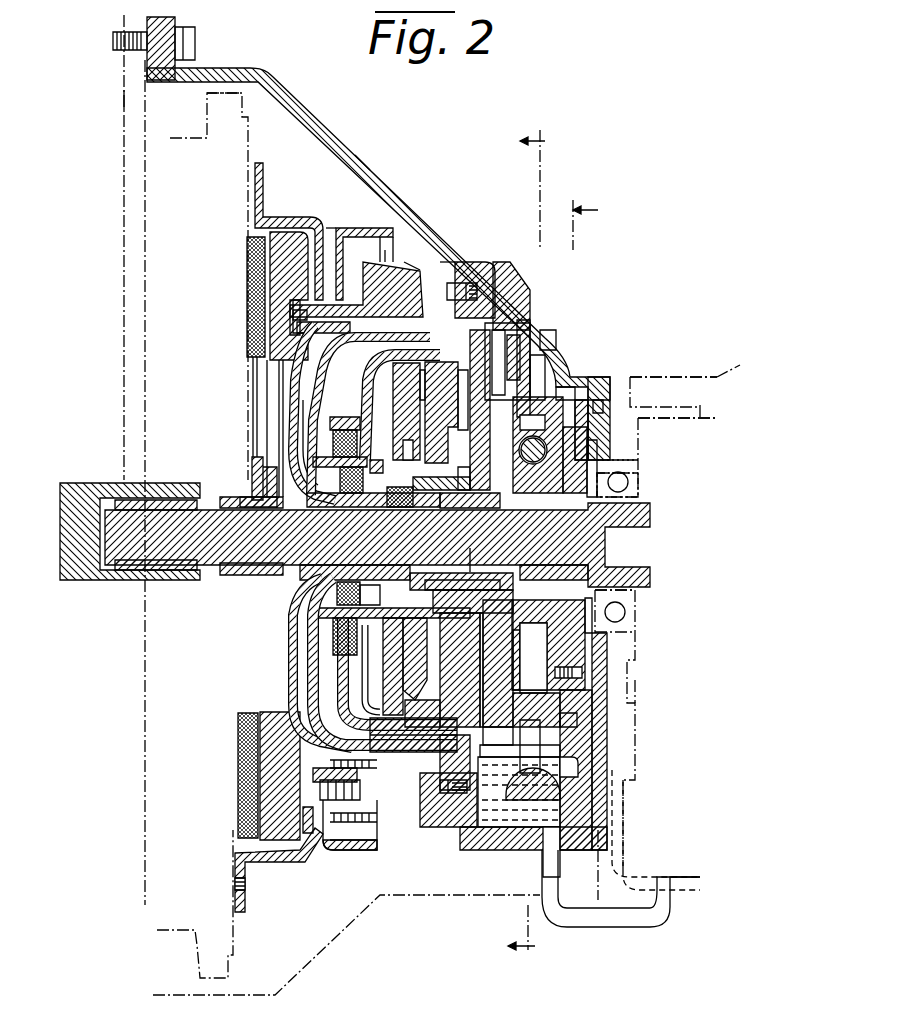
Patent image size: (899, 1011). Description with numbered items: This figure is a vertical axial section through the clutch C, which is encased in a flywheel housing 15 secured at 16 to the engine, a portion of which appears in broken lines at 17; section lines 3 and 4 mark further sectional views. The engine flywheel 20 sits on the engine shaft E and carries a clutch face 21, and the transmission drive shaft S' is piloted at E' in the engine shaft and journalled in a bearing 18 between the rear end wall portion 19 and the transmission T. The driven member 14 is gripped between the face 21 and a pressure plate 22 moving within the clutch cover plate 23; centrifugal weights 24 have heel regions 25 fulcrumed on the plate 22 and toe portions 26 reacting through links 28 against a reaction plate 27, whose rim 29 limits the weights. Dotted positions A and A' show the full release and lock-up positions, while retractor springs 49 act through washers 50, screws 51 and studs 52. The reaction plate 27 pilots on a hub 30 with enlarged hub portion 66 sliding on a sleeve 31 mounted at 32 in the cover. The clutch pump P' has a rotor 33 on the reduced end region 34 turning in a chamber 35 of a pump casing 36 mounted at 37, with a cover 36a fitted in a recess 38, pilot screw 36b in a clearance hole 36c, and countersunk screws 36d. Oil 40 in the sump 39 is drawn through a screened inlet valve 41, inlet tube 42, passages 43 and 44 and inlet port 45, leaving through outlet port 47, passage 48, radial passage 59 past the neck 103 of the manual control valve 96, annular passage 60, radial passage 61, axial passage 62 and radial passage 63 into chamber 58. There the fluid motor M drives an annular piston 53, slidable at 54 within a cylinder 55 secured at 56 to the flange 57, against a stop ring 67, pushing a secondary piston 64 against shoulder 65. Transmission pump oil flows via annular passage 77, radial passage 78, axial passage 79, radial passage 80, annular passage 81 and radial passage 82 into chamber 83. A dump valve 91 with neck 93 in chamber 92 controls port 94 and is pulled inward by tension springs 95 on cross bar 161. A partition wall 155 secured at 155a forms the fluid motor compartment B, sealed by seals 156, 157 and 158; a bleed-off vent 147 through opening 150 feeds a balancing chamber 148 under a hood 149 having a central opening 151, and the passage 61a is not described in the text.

The securing region 16 is at (196, 43).
The engine portion 17 is at (124, 103).
The engine flywheel 20 is at (215, 120).
The flywheel housing 15 is at (324, 114).
The clutch C is at (370, 138).
The section line 3 is at (547, 543).
The section line 4 is at (595, 225).
The clutch face 21 is at (252, 228).
The pressure plate 22 is at (284, 240).
The driven member 14 is at (250, 343).
The reaction plate 27 is at (340, 230).
The lock-up position A' is at (320, 197).
The full release position A is at (372, 231).
The rim 29 is at (388, 250).
The centrifugal control elements 24 is at (404, 262).
The cylinder 55 is at (430, 280).
The heel regions 25 is at (300, 306).
The toe portions 26 is at (300, 325).
The links 28 is at (292, 378).
The fluid motor compartment B is at (312, 392).
The hood 149 is at (425, 392).
The annular partition wall 155 is at (425, 412).
The oil seal 156 is at (345, 440).
The central opening 151 is at (425, 442).
The seal 157 is at (345, 476).
The passage 61a is at (417, 394).
The annular piston 53 is at (443, 412).
The sliding region 54 is at (455, 400).
The hub 30 is at (470, 450).
The radial passage 63 is at (456, 476).
The circular flange 57 is at (490, 290).
The securing point 56 is at (462, 283).
The fluid motor M is at (455, 260).
The securing point 155a is at (470, 265).
The centrifugal dump valve 91 is at (505, 310).
The reduced neck portion 93 is at (510, 325).
The radial valve chamber 92 is at (522, 335).
The port 94 is at (517, 355).
The cross bar 161 is at (547, 336).
The tension springs 95 is at (537, 362).
The forwardly extending passage 48 is at (562, 376).
The outlet port 47 is at (577, 383).
The clutch pump P' is at (633, 369).
The clearance hole 36c is at (686, 378).
The transmission T is at (700, 405).
The recess 38 is at (600, 400).
The manual control valve 96 is at (593, 425).
The pilot screw 36b is at (700, 420).
The reduced neck region 103 is at (582, 440).
The rotor 33 is at (582, 455).
The annular passage 60 is at (592, 466).
The radial passage 61 is at (630, 484).
The radial passage 59 is at (533, 436).
The engine shaft E is at (110, 551).
The pilot E' is at (142, 562).
The transmission drive shaft S' is at (377, 564).
The hub portion 66 is at (285, 537).
The balancing chamber 148 is at (355, 555).
The opening 150 is at (358, 570).
The seal 158 is at (453, 559).
The radial passage 82 is at (450, 572).
The bleed-off vent 147 is at (472, 549).
The axial passage 79 is at (480, 575).
The axial passage 62 is at (578, 503).
The sleeve mounting 32 is at (300, 600).
The sleeve 31 is at (388, 640).
The shoulder 65 is at (312, 650).
The secondary piston 64 is at (340, 700).
The radial passage 80 is at (462, 614).
The radial passage 78 is at (462, 670).
The annular passage 81 is at (426, 659).
The annular passage 77 is at (432, 695).
The casing mounting 37 is at (516, 658).
The passage 44 is at (502, 660).
The passage 43 is at (522, 699).
The chamber 58 is at (498, 729).
The inlet tube 42 is at (520, 741).
The inlet port 45 is at (535, 735).
The screened inlet valve 41 is at (533, 784).
The oil sump 39 is at (500, 802).
The chamber 83 is at (392, 752).
The stop ring 67 is at (425, 760).
The screws 51 is at (368, 800).
The washers 50 is at (375, 818).
The retractor springs 49 is at (357, 850).
The studs 52 is at (310, 835).
The clutch cover plate 23 is at (286, 862).
The chamber 35 is at (588, 650).
The cover 36a is at (582, 672).
The pump casing 36 is at (600, 624).
The rear end wall portion 19 is at (600, 720).
The body of oil 40 is at (580, 790).
The reduced end region 34 is at (620, 592).
The bearing 18 is at (625, 612).
The countersunk screws 36d is at (640, 690).